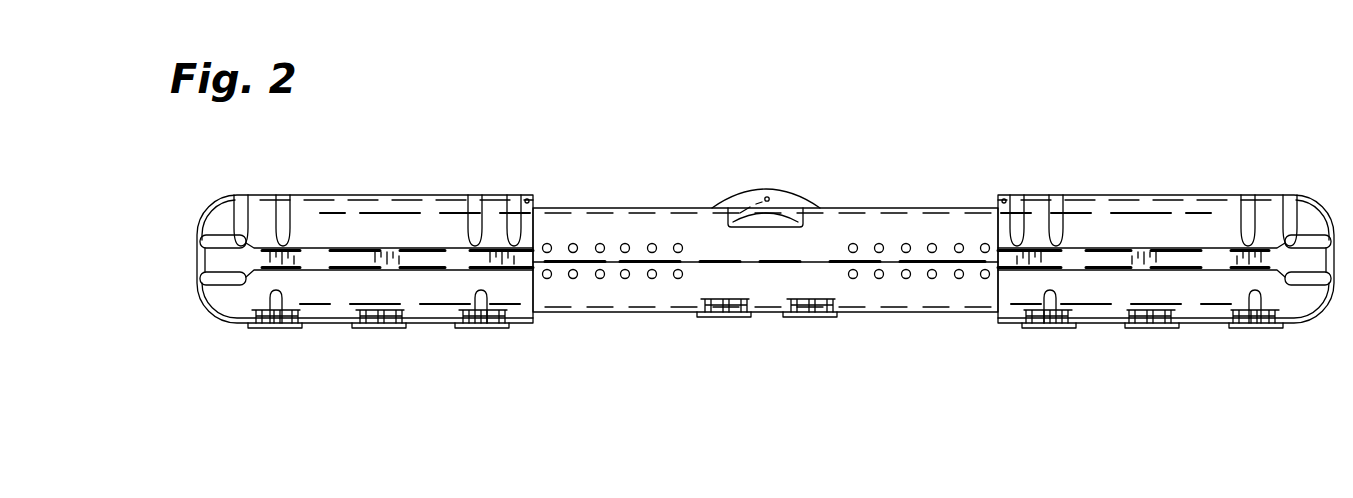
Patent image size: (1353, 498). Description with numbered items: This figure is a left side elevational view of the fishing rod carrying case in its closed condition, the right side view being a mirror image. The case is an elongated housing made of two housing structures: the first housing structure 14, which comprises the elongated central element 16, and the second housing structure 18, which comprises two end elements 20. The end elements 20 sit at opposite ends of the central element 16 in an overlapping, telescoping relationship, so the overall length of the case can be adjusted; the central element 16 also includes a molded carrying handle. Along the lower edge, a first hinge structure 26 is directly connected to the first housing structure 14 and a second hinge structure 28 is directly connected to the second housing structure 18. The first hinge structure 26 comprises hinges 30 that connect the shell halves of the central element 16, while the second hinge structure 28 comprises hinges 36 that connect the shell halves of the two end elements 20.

The first housing structure 14 is at (687, 164).
The elongated central element 16 is at (868, 208).
The second housing structure 18 is at (409, 166).
The end elements 20 is at (336, 197).
The first hinge structure 26 is at (758, 379).
The second hinge structure 28 is at (377, 379).
The hinges 30 is at (708, 328).
The hinges 36 is at (265, 328).